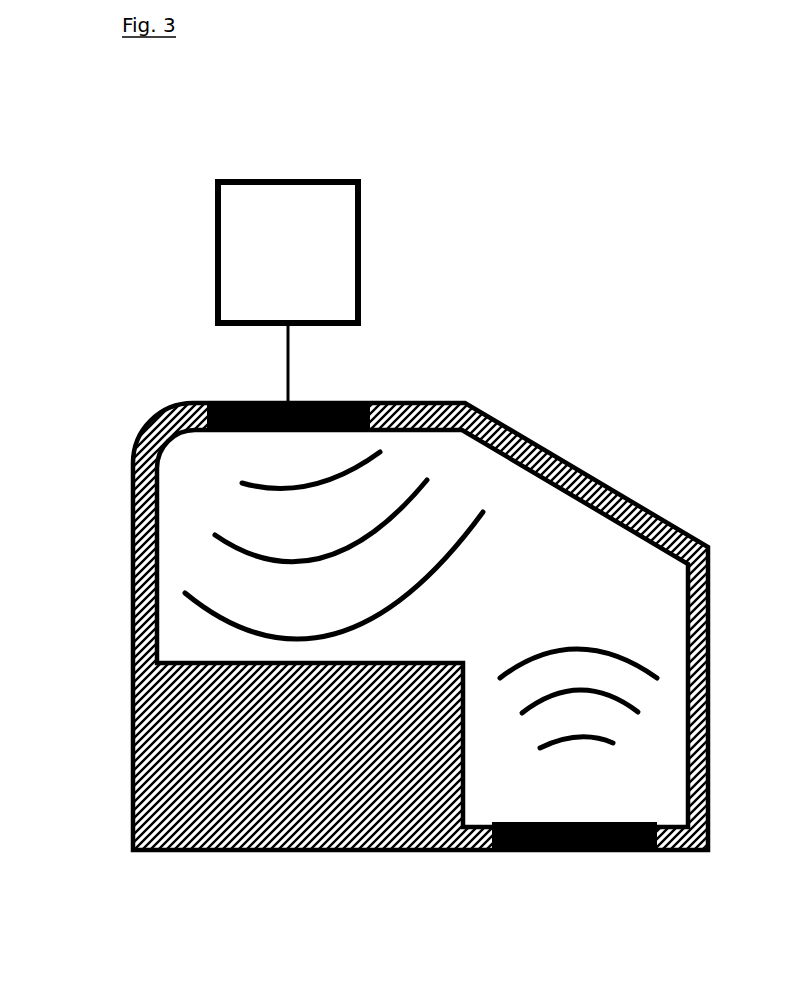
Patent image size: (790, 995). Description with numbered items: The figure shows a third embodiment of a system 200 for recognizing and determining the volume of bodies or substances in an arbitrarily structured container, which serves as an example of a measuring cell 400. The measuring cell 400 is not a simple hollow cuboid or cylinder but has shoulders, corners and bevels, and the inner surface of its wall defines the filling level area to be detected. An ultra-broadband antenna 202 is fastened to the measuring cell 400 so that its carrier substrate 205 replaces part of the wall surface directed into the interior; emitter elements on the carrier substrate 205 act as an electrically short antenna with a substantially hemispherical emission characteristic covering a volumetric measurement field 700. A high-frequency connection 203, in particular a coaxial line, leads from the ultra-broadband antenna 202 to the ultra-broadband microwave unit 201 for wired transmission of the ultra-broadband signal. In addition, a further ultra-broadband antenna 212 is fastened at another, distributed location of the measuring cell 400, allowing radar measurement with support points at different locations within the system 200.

The system 200 is at (503, 290).
The ultra-broadband microwave unit 201 is at (361, 262).
The ultra-broadband antenna 202 is at (335, 401).
The high-frequency connection 203 is at (286, 367).
The carrier substrate 205 is at (252, 431).
The further ultra-broadband antenna 212 is at (543, 822).
The measuring cell 400 is at (607, 487).
The volumetric measurement field 700 is at (518, 632).